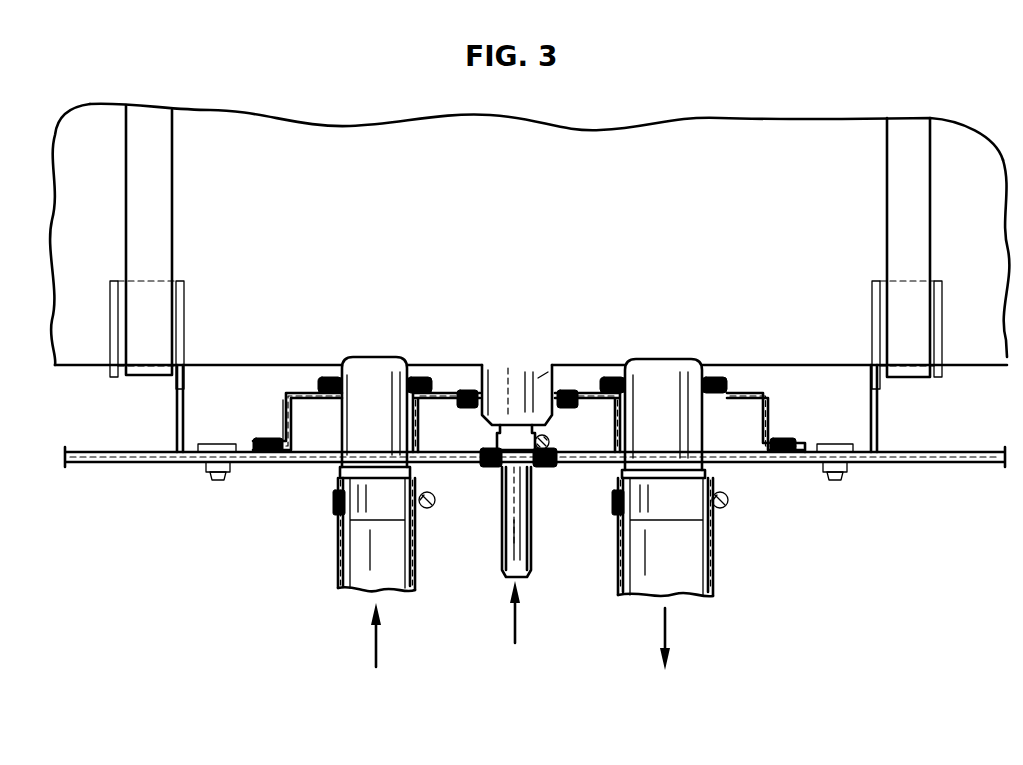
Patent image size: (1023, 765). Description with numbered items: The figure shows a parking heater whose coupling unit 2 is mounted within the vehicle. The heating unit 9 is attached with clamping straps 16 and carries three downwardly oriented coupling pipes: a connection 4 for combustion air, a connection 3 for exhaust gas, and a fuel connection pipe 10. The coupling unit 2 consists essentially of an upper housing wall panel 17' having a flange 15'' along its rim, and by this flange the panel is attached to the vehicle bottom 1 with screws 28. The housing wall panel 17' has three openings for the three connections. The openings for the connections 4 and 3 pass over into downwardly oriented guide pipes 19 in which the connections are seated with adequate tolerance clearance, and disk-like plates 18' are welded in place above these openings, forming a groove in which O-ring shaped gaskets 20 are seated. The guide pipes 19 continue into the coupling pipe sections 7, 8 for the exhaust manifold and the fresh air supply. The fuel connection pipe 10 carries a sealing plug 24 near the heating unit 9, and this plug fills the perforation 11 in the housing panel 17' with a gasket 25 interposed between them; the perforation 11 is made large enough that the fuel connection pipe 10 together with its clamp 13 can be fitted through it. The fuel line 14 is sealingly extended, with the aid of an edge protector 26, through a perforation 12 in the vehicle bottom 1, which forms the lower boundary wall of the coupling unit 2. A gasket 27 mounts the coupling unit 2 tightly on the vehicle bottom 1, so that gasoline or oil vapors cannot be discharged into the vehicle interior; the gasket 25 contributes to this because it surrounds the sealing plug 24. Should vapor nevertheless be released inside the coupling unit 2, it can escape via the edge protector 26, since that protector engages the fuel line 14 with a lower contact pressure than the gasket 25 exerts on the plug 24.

The vehicle bottom 1 is at (940, 463).
The coupling unit 2 is at (778, 400).
The connection for exhaust gas 3 is at (662, 398).
The connection for combustion air 4 is at (372, 397).
The coupling pipe section 7 is at (405, 505).
The coupling pipe section 8 is at (700, 501).
The heating unit 9 is at (535, 243).
The fuel connection pipe 10 is at (490, 428).
The perforation 11 is at (511, 375).
The perforation 12 is at (504, 468).
The clamp 13 is at (550, 443).
The fuel line 14 is at (513, 545).
The flange 15'' is at (534, 441).
The clamping straps 16 is at (155, 240).
The upper housing wall panel 17' is at (297, 384).
The disk-like plates 18' is at (599, 385).
The guide pipes 19 is at (328, 440).
The gaskets 20 is at (410, 378).
The sealing plug 24 is at (555, 380).
The gasket 25 is at (468, 390).
The edge protector 26 is at (540, 468).
The gasket 27 is at (268, 455).
The screws 28 is at (226, 472).